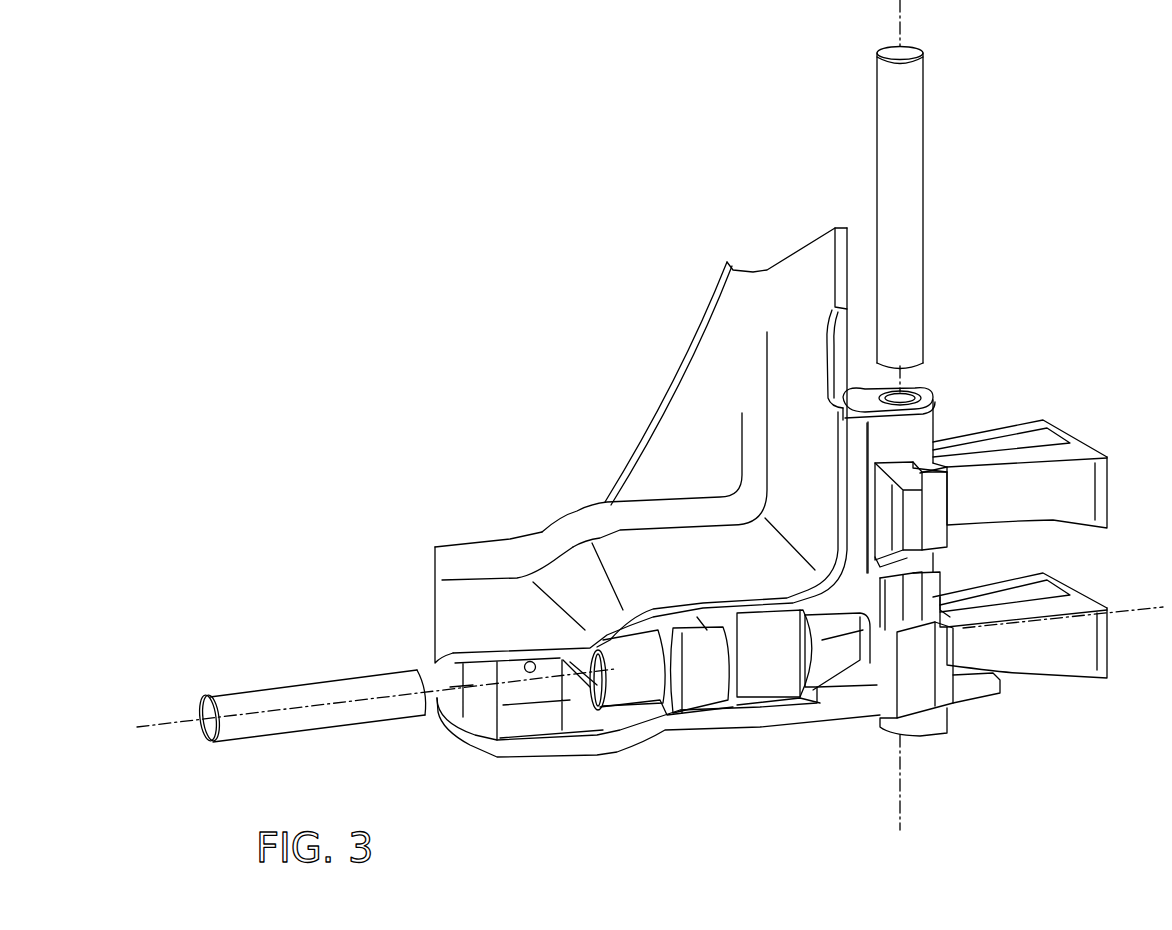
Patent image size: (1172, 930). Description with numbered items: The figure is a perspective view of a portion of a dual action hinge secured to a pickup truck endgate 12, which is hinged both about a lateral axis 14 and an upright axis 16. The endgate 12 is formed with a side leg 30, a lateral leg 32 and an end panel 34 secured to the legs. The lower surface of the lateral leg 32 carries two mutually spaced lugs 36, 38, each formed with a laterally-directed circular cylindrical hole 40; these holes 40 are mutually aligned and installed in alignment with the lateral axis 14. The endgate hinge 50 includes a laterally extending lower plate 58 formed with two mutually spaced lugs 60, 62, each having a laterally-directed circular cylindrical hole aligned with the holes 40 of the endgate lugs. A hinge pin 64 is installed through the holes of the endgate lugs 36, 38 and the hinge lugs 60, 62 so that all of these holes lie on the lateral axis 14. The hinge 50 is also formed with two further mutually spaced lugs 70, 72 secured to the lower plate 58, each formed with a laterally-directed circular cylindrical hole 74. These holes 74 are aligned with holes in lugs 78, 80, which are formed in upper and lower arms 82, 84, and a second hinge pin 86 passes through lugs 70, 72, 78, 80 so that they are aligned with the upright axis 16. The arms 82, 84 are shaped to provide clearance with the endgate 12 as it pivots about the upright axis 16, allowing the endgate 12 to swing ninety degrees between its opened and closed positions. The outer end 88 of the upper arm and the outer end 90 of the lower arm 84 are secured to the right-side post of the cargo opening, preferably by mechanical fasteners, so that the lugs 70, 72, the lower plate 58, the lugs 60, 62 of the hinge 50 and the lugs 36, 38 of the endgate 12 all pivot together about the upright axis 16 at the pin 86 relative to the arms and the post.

The endgate 12 is at (625, 432).
The lateral axis 14 is at (140, 719).
The upright axis 16 is at (903, 386).
The side leg 30 is at (818, 274).
The lateral leg 32 is at (432, 594).
The end panel 34 is at (700, 334).
The lug 36 is at (770, 678).
The lug 38 is at (643, 693).
The circular cylindrical hole 40 is at (600, 688).
The endgate hinge 50 is at (1003, 531).
The lower plate 58 is at (793, 727).
The lug 60 is at (820, 642).
The lug 62 is at (708, 698).
The hinge pin 64 is at (297, 680).
The lug 70 is at (932, 410).
The lug 72 is at (938, 580).
The circular cylindrical hole 74 is at (903, 390).
The lug 78 is at (933, 515).
The lug 80 is at (923, 683).
The upper arm 82 is at (1025, 426).
The lower arm 84 is at (1033, 673).
The second hinge pin 86 is at (927, 281).
The outer end of arm 88 is at (1032, 443).
The outer end of arm 90 is at (1048, 642).